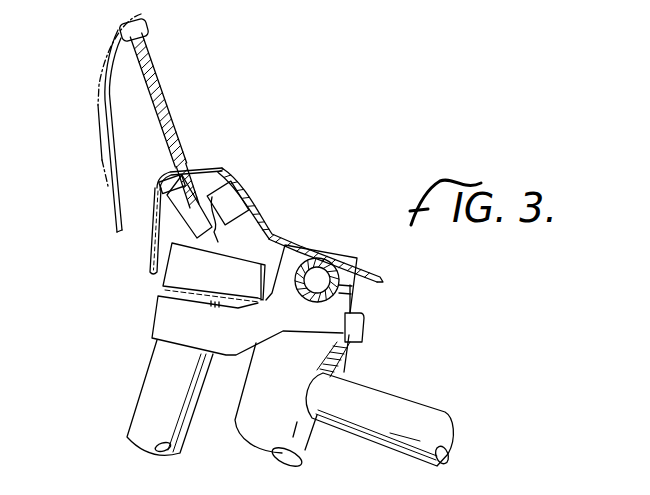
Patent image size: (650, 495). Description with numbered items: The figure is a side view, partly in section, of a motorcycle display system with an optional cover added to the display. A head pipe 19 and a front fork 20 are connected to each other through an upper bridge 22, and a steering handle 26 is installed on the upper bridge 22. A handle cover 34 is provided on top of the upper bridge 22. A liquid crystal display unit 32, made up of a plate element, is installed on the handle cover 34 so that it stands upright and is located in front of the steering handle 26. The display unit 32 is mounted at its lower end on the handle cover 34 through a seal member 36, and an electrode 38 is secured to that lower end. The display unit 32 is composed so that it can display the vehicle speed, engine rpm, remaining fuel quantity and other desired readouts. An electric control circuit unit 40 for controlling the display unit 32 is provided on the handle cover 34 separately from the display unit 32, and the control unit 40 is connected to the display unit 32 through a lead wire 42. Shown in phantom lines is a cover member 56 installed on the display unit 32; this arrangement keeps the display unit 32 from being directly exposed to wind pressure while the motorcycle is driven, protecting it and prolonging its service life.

The head pipe 19 is at (247, 418).
The front fork 20 is at (142, 393).
The upper bridge 22 is at (157, 314).
The steering handle 26 is at (345, 298).
The liquid crystal display unit 32 is at (156, 70).
The handle cover 34 is at (290, 232).
The seal member 36 is at (190, 160).
The electrode 38 is at (155, 235).
The electric control circuit unit 40 is at (247, 245).
The lead wire 42 is at (200, 244).
The cover member 56 is at (100, 115).